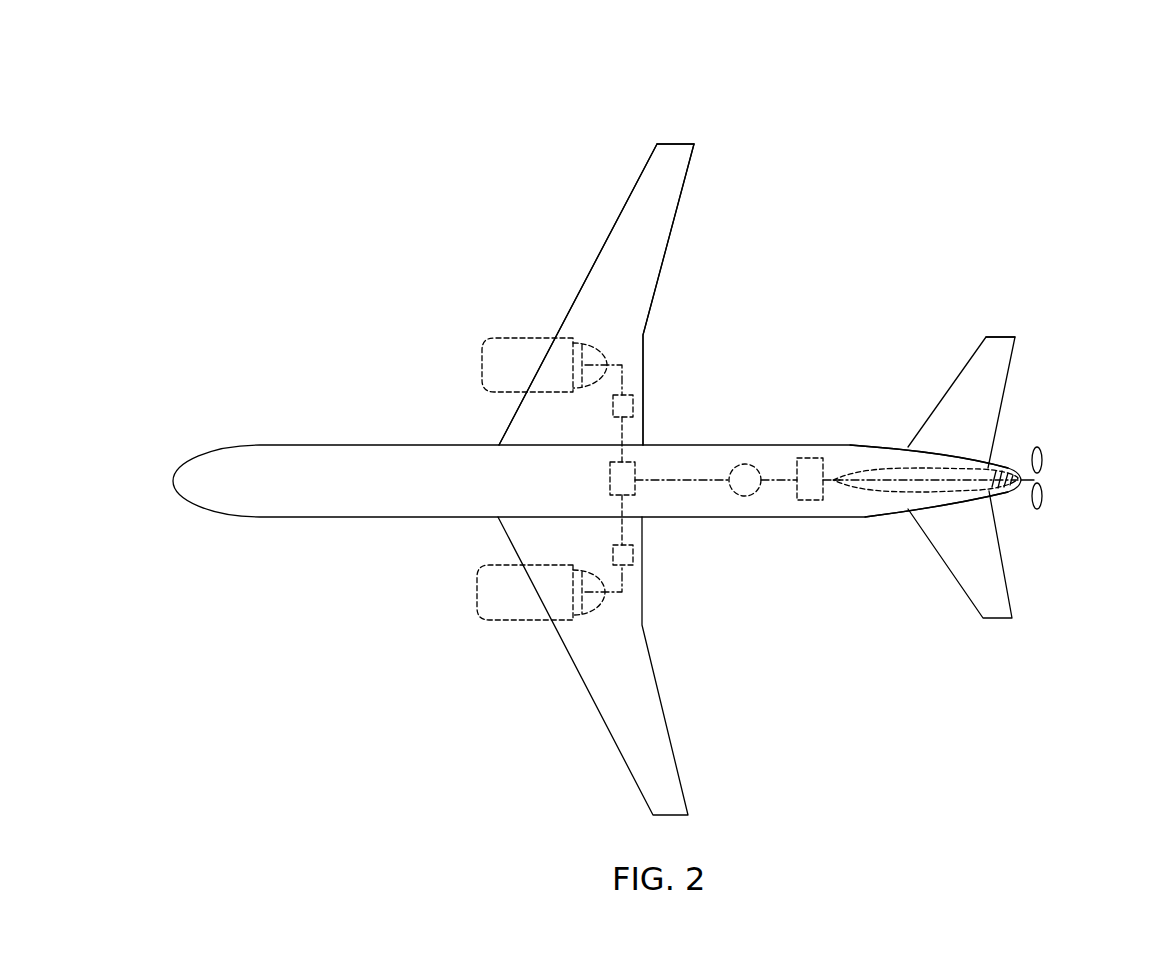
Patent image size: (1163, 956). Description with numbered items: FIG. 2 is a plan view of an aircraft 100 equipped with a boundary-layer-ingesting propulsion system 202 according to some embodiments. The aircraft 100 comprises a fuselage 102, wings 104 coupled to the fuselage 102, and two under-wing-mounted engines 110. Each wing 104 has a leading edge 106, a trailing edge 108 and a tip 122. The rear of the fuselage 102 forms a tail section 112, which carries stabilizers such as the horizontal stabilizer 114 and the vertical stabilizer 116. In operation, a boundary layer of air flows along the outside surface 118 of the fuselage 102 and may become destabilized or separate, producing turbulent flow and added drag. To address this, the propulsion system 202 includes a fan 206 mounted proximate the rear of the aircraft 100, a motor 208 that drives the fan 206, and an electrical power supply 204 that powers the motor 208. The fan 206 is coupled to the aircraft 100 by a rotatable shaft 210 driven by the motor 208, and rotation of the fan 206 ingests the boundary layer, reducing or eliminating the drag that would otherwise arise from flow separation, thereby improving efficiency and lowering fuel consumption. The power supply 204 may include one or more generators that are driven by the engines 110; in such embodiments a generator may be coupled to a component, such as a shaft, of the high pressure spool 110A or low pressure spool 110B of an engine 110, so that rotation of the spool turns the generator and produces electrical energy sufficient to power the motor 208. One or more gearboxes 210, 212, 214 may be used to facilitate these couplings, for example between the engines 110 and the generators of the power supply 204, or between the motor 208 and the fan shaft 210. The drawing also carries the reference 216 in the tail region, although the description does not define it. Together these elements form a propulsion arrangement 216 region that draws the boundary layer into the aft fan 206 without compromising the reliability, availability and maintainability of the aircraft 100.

The aircraft 100 is at (975, 98).
The fuselage 102 is at (735, 445).
The wings 104 is at (598, 255).
The leading edge 106 is at (604, 229).
The trailing edge 108 is at (686, 222).
The engine 110 is at (497, 338).
The high pressure spool 110A is at (560, 562).
The low pressure spool 110B is at (583, 620).
The tail section 112 is at (935, 381).
The horizontal stabilizer 114 is at (1013, 346).
The vertical stabilizer 116 is at (958, 470).
The outside surface 118 is at (790, 432).
The tip 122 is at (680, 131).
The propulsion system 202 is at (830, 537).
The power supply 204 is at (640, 470).
The fan 206 is at (1043, 457).
The motor 208 is at (745, 497).
The fan shaft 210 is at (633, 393).
The gearbox 212 is at (633, 553).
The gearbox 214 is at (800, 500).
The tail propulsion assembly 216 is at (1080, 381).